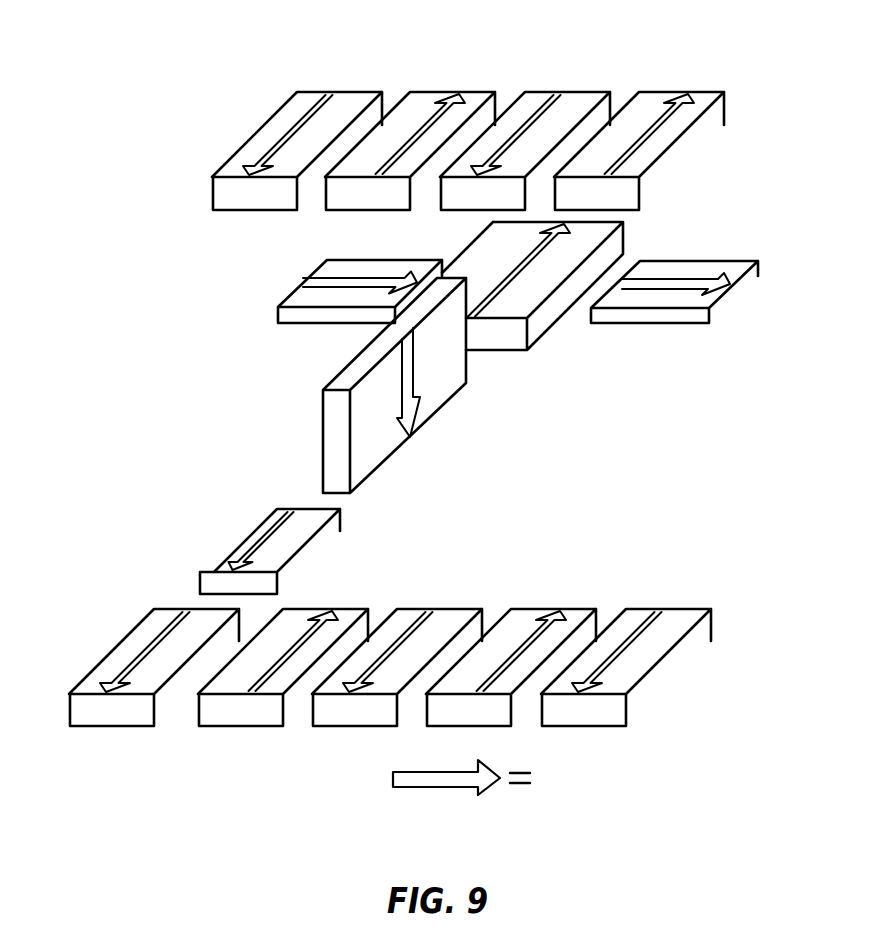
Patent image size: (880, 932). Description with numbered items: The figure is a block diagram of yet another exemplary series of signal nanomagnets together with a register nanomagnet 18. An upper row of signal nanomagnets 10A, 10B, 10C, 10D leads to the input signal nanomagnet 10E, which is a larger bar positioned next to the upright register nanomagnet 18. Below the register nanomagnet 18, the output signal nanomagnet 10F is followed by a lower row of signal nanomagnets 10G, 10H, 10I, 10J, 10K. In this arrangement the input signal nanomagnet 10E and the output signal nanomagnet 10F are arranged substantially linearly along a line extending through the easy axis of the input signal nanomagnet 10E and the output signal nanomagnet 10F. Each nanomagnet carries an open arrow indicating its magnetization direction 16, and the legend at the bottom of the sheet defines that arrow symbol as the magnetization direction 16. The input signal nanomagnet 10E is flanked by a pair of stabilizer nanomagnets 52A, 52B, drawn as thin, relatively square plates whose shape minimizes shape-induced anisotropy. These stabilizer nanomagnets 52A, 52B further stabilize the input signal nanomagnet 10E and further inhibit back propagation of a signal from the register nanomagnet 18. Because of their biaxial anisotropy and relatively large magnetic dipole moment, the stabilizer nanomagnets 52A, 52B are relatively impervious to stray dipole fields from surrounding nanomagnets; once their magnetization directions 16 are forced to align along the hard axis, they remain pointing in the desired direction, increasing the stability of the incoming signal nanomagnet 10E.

The signal nanomagnet 10A is at (353, 90).
The signal nanomagnet 10B is at (463, 90).
The signal nanomagnet 10C is at (578, 90).
The signal nanomagnet 10D is at (698, 92).
The input signal nanomagnet 10E is at (627, 240).
The output signal nanomagnet 10F is at (238, 533).
The signal nanomagnet 10G is at (130, 630).
The signal nanomagnet 10H is at (340, 607).
The signal nanomagnet 10I is at (450, 605).
The signal nanomagnet 10J is at (562, 605).
The signal nanomagnet 10K is at (685, 605).
The magnetization direction 16 is at (583, 780).
The register nanomagnet 18 is at (433, 413).
The stabilizer nanomagnet 52A is at (283, 300).
The stabilizer nanomagnet 52B is at (717, 257).